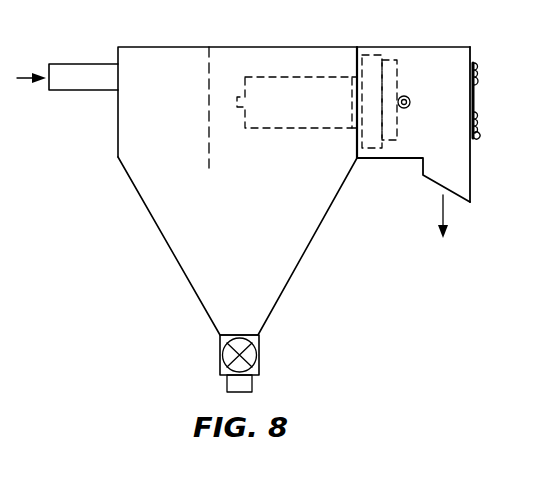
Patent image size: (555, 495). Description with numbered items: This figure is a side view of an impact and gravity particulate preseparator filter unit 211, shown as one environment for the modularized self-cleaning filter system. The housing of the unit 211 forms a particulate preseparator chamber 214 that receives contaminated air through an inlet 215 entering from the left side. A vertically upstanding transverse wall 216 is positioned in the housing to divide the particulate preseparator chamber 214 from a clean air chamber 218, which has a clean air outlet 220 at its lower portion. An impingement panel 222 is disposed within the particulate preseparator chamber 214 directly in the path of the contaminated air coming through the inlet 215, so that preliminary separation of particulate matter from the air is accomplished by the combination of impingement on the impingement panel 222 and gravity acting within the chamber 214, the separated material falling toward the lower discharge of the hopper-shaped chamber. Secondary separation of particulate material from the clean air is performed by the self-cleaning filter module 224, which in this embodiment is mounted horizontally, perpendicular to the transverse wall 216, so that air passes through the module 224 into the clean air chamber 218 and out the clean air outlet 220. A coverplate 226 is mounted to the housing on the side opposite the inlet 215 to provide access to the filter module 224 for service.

The impact and gravity particulate preseparator filter unit 211 is at (160, 276).
The particulate preseparator chamber 214 is at (273, 270).
The inlet 215 is at (87, 92).
The transverse wall 216 is at (372, 63).
The clean air chamber 218 is at (458, 170).
The clean air outlet 220 is at (437, 188).
The impingement panel 222 is at (209, 155).
The self-cleaning filter module 224 is at (327, 55).
The coverplate 226 is at (477, 99).